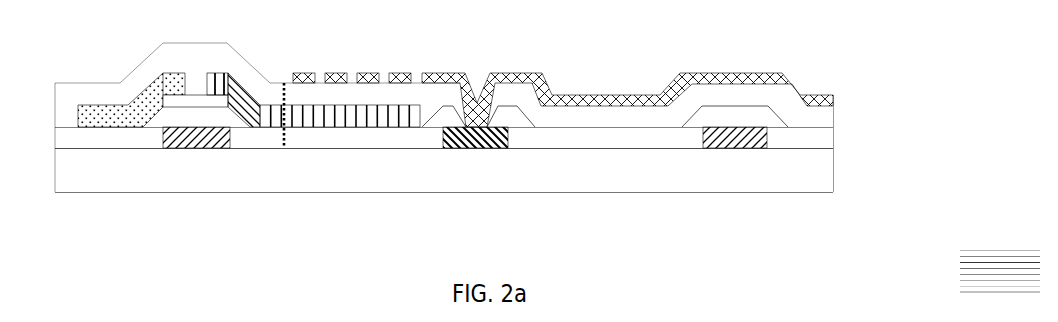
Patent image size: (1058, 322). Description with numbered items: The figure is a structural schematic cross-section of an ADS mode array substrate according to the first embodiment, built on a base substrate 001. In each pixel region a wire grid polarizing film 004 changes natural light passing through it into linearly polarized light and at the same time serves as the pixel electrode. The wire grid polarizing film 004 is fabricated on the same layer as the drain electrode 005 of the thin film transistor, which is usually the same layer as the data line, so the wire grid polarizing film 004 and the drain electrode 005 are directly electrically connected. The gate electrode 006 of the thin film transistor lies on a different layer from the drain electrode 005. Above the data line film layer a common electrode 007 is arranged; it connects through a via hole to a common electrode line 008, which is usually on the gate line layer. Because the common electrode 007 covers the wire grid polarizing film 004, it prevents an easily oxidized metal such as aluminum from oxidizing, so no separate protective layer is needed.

The base substrate 001 is at (818, 170).
The wire grid polarizing film 004 is at (322, 125).
The drain electrode 005 is at (257, 125).
The gate electrode 006 is at (202, 143).
The common electrode 007 is at (568, 95).
The common electrode line 008 is at (477, 148).